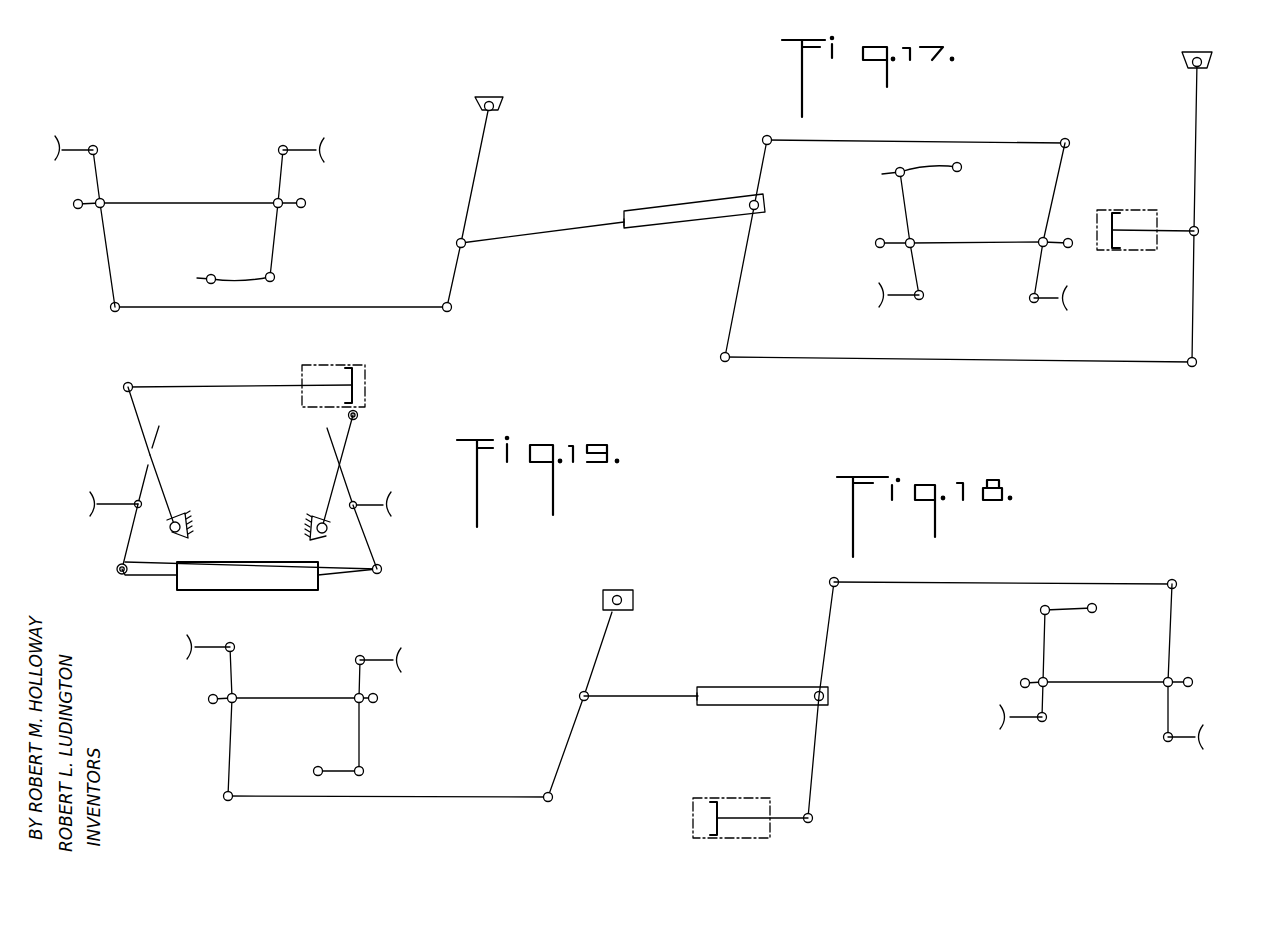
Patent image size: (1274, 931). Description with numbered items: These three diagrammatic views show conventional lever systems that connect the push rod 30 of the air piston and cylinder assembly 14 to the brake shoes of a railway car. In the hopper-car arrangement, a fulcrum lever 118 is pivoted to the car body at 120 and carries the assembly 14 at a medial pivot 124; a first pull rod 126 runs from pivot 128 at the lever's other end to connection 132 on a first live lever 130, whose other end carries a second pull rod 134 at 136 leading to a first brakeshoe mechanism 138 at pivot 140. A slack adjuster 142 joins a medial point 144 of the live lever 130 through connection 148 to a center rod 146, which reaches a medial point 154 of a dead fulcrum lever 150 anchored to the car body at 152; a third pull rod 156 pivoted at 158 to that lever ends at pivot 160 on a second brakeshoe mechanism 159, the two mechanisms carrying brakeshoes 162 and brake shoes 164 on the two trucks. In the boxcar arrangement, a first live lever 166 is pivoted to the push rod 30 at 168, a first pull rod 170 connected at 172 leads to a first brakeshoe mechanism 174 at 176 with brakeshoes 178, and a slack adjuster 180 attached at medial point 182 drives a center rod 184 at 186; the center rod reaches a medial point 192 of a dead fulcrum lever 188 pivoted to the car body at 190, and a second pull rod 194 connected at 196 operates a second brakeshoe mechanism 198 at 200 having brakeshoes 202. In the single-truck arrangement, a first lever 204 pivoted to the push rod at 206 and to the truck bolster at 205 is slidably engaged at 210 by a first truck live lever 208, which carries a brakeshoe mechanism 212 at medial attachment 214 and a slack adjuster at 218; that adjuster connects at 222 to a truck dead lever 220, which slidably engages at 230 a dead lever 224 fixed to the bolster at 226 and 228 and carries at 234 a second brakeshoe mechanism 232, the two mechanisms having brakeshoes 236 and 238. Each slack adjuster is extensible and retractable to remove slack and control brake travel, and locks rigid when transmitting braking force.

In FIG. 17, the air piston and cylinder assembly 14 is at (1137, 212).
In FIG. 18, the air piston and cylinder assembly 14 is at (737, 842).
In FIG. 19, the air piston and cylinder assembly 14 is at (322, 405).
In FIG. 17, the push rod 30 is at (1177, 228).
In FIG. 18, the push rod 30 is at (785, 822).
In FIG. 19, the push rod 30 is at (217, 382).
In FIG. 17, the fulcrum lever 118 is at (1198, 155).
In FIG. 17, the pivotal attachment to car body 120 is at (1208, 62).
In FIG. 17, the pivotal connection of cylinder assembly 124 is at (1200, 235).
In FIG. 17, the first pull rod 126 is at (1035, 360).
In FIG. 17, the pivotal connection of first pull rod 128 is at (1198, 363).
In FIG. 17, the first live lever 130 is at (743, 262).
In FIG. 17, the connection of first pull rod to live lever 132 is at (718, 360).
In FIG. 17, the second pull rod 134 is at (863, 138).
In FIG. 17, the pivotal connection of second pull rod 136 is at (767, 132).
In FIG. 17, the first brakeshoe mechanism 138 is at (877, 203).
In FIG. 17, the pivotal connection of first brakeshoe mechanism 140 is at (1072, 142).
In FIG. 17, the slack adjuster 142 is at (674, 203).
In FIG. 17, the connection of slack adjuster to live lever 144 is at (767, 203).
In FIG. 17, the center rod 146 is at (553, 228).
In FIG. 17, the connection of slack adjuster to center rod 148 is at (622, 227).
In FIG. 17, the dead fulcrum lever 150 is at (476, 165).
In FIG. 17, the pivotal anchor of dead fulcrum lever 152 is at (475, 97).
In FIG. 17, the connection of center rod to dead fulcrum lever 154 is at (458, 242).
In FIG. 17, the third pull rod 156 is at (376, 302).
In FIG. 17, the pivotal connection of third pull rod 158 is at (453, 307).
In FIG. 17, the second brakeshoe mechanism 159 is at (70, 267).
In FIG. 17, the pivotal connection of second brakeshoe mechanism 160 is at (108, 310).
In FIG. 17, the brakeshoes 162 is at (878, 298).
In FIG. 17, the brake shoes 164 is at (60, 140).
In FIG. 18, the first live lever 166 is at (820, 743).
In FIG. 18, the pivotal attachment to push rod 168 is at (815, 819).
In FIG. 18, the first pull rod 170 is at (932, 587).
In FIG. 18, the connection of first pull rod 172 is at (838, 587).
In FIG. 18, the first brakeshoe mechanism 174 is at (1192, 642).
In FIG. 18, the connection of first brakeshoe mechanism 176 is at (1177, 580).
In FIG. 18, the brakeshoes 178 is at (995, 730).
In FIG. 18, the slack adjuster 180 is at (732, 687).
In FIG. 18, the connection of slack adjuster to live lever 182 is at (828, 696).
In FIG. 18, the center rod 184 is at (638, 697).
In FIG. 18, the connection of center rod to slack adjuster 186 is at (695, 687).
In FIG. 18, the dead fulcrum lever 188 is at (600, 640).
In FIG. 18, the pivotal attachment of dead fulcrum lever 190 is at (612, 587).
In FIG. 18, the connection of center rod to dead fulcrum lever 192 is at (578, 697).
In FIG. 18, the second pull rod 194 is at (487, 793).
In FIG. 18, the connection of second pull rod 196 is at (557, 797).
In FIG. 18, the second brakeshoe mechanism 198 is at (220, 735).
In FIG. 18, the connection of second brakeshoe mechanism 200 is at (227, 802).
In FIG. 18, the brakeshoes 202 is at (185, 655).
In FIG. 19, the first lever 204 is at (133, 417).
In FIG. 19, the pivotal attachment to truck bolster 205 is at (180, 517).
In FIG. 19, the pivotal connection to push rod 206 is at (128, 382).
In FIG. 19, the first truck live lever 208 is at (128, 538).
In FIG. 19, the sliding engagement 210 is at (153, 463).
In FIG. 19, the first brakeshoe mechanism 212 is at (115, 493).
In FIG. 19, the attachment of brakeshoe mechanism 214 is at (142, 510).
In FIG. 19, the connection of slack adjuster to truck live lever 218 is at (120, 578).
In FIG. 19, the truck dead lever 220 is at (363, 543).
In FIG. 19, the connection of slack adjuster to truck dead lever 222 is at (383, 572).
In FIG. 19, the dead lever 224 is at (347, 436).
In FIG. 19, the attachment of dead lever to truck bolster 226 is at (320, 540).
In FIG. 19, the attachment of dead lever to truck bolster 228 is at (360, 413).
In FIG. 19, the sliding engagement 230 is at (335, 463).
In FIG. 19, the second brakeshoe mechanism 232 is at (375, 487).
In FIG. 19, the connection of second brakeshoe mechanism 234 is at (358, 510).
In FIG. 19, the brakeshoes 236 is at (90, 497).
In FIG. 19, the brakeshoes 238 is at (397, 502).